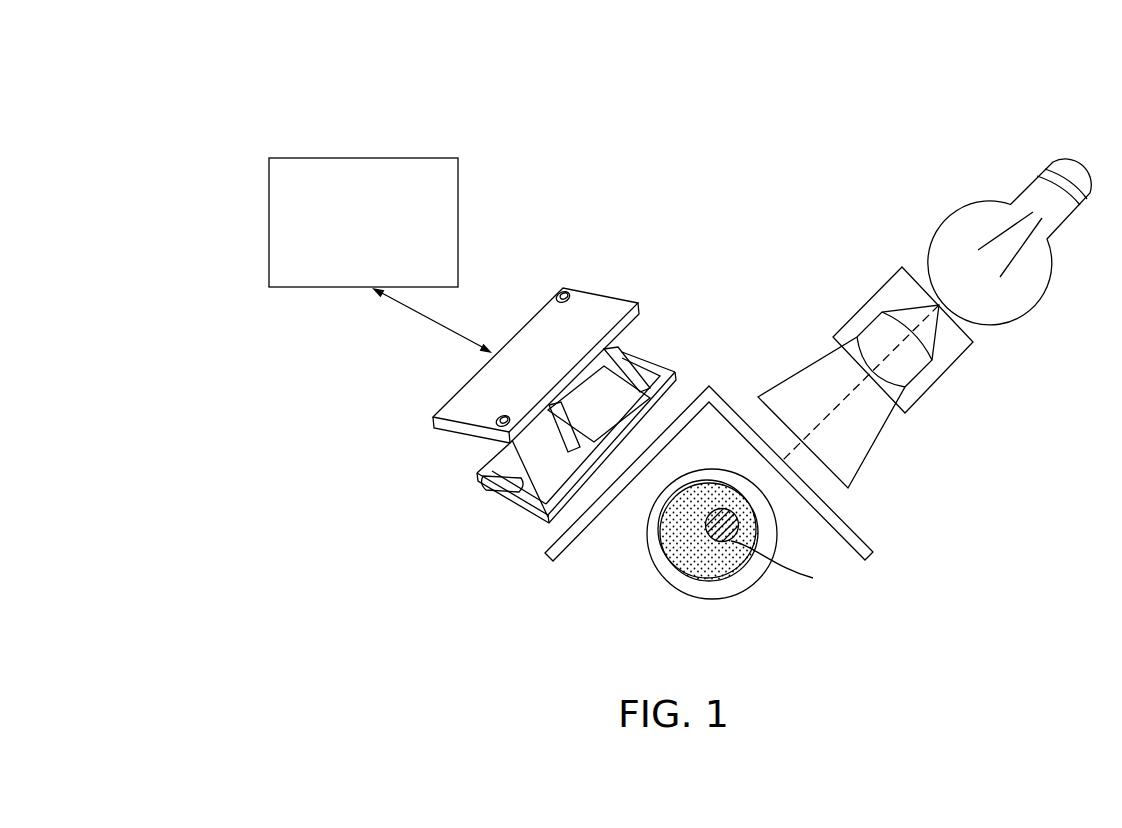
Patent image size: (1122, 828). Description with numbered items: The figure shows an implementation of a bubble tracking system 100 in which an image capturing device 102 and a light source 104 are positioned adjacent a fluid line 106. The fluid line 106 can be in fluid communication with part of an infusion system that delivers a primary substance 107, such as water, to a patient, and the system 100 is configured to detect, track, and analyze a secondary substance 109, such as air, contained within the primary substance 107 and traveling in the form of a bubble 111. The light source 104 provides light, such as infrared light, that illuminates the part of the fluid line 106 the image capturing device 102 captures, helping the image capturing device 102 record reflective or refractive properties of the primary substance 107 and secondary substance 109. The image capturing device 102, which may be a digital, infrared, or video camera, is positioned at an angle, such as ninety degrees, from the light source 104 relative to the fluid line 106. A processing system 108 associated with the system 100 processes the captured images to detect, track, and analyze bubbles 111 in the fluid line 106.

The system 100 is at (258, 48).
The image capturing device 102 is at (613, 358).
The light source 104 is at (1043, 295).
The fluid line 106 is at (660, 562).
The primary substance 107 is at (728, 572).
The secondary substance 109 is at (718, 542).
The bubble 111 is at (794, 566).
The processing system 108 is at (462, 220).